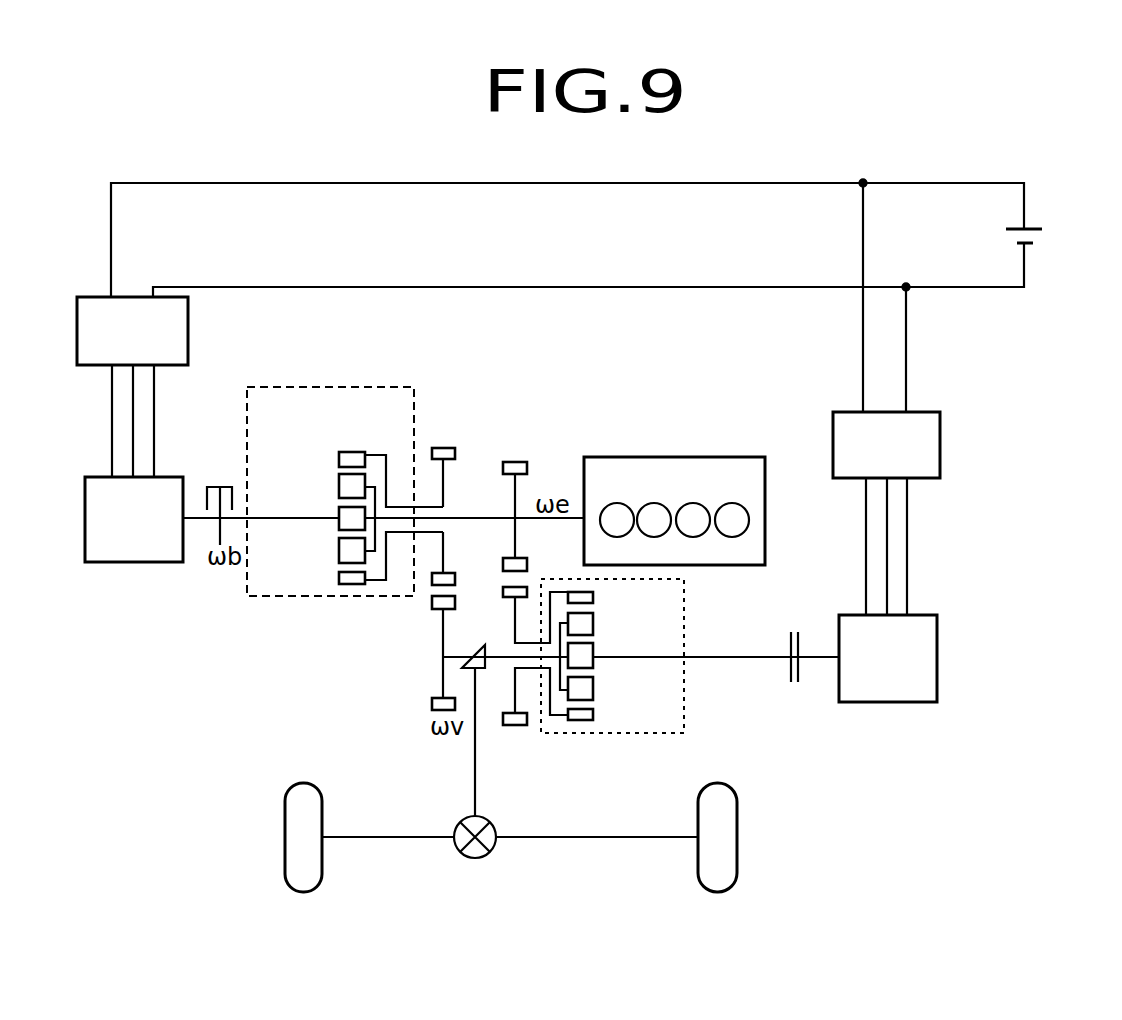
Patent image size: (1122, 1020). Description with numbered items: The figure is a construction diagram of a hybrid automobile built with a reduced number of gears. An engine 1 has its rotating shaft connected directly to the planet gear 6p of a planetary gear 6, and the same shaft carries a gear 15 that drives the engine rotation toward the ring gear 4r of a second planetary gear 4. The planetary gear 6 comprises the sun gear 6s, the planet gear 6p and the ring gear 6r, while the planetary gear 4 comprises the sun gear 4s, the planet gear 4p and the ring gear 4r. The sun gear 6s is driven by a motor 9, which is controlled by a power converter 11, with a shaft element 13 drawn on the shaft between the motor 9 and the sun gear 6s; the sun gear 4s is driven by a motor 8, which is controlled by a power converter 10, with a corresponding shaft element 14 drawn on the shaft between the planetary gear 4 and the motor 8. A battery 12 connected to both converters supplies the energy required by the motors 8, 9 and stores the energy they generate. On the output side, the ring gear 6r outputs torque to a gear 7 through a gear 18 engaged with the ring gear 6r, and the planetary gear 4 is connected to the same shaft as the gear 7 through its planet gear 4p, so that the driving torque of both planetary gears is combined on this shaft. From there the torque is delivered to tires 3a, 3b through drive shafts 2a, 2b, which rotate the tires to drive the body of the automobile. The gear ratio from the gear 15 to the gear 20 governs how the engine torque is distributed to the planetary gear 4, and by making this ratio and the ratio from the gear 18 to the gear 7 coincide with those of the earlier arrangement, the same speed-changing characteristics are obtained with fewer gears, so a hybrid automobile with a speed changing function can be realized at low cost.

The engine 1 is at (682, 457).
The drive shaft 2a is at (397, 837).
The drive shaft 2b is at (620, 837).
The tire 3a is at (300, 783).
The tire 3b is at (718, 783).
The planetary gear 4 is at (684, 586).
The ring gear 4r is at (593, 596).
The sun gear 4s is at (593, 650).
The planet gear 4p is at (593, 688).
The planetary gear 6 is at (340, 387).
The ring gear 6r is at (339, 458).
The sun gear 6s is at (339, 515).
The planet gear 6p is at (339, 545).
The gear 7 is at (432, 600).
The motor 8 is at (937, 648).
The motor 9 is at (121, 562).
The power converter 10 is at (940, 435).
The power converter 11 is at (188, 323).
The battery 12 is at (1042, 229).
The brake 13 is at (220, 487).
The clutch 14 is at (793, 632).
The gear 15 is at (517, 462).
The gear 18 is at (446, 448).
The gear 20 is at (517, 725).